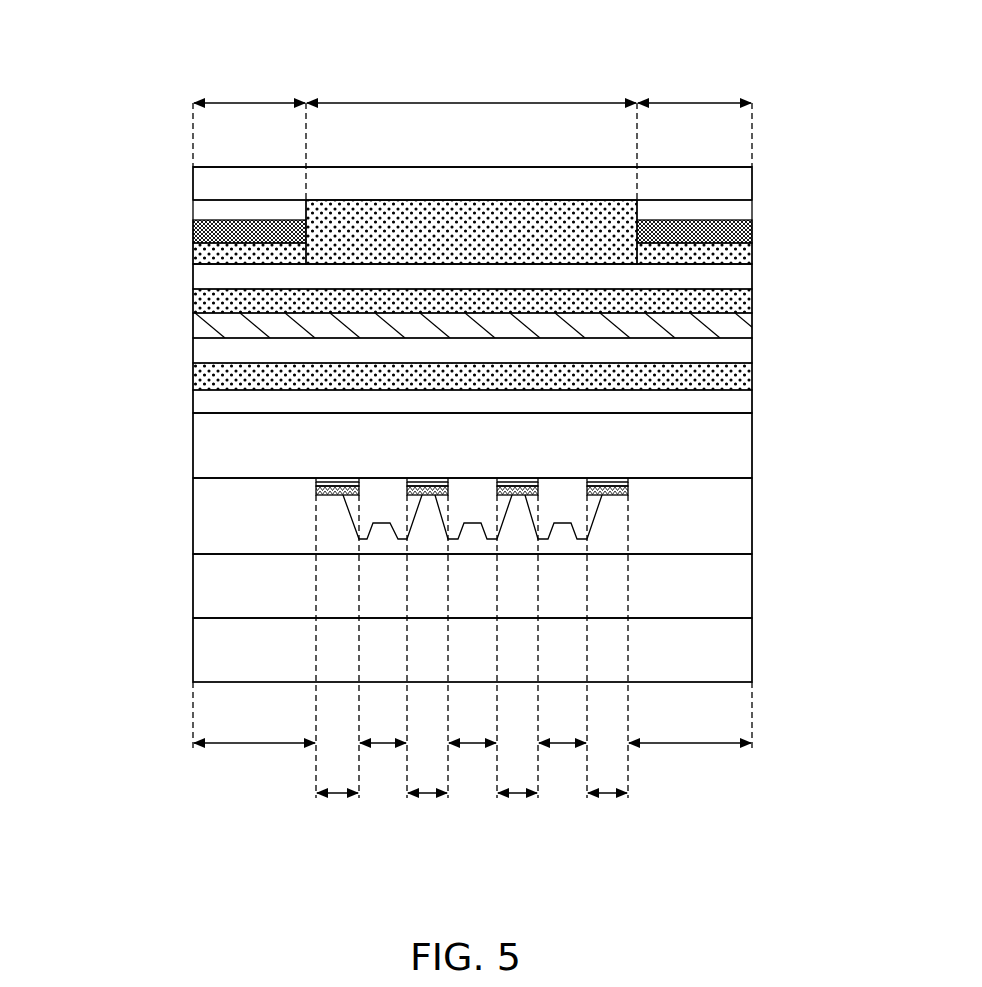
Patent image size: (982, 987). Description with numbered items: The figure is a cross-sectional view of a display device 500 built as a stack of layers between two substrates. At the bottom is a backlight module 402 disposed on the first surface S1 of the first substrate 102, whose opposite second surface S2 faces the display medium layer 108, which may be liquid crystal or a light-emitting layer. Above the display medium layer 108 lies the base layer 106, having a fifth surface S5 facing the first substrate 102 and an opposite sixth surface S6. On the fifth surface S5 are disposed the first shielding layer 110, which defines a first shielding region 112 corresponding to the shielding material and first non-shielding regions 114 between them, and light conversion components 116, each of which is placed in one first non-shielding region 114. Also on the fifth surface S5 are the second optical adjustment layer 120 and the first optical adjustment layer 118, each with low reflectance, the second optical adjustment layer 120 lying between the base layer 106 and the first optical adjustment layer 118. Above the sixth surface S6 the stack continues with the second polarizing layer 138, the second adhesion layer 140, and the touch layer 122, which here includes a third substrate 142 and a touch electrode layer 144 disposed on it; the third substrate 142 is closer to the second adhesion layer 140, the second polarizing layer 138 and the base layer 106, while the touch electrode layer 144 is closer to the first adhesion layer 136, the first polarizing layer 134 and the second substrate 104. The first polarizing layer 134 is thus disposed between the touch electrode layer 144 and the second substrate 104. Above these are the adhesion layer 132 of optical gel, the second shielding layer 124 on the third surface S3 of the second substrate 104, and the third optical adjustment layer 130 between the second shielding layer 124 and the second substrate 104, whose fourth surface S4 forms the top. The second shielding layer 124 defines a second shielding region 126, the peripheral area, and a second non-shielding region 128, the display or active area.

The display device 500 is at (172, 32).
The second substrate 104 is at (738, 184).
The third optical adjustment layer 130 is at (738, 212).
The second shielding layer 124 is at (738, 232).
The adhesion layer 132 is at (738, 258).
The first polarizing layer 134 is at (738, 278).
The first adhesion layer 136 is at (738, 303).
The touch layer 122 is at (405, 335).
The touch electrode layer 144 is at (205, 329).
The third substrate 142 is at (205, 352).
The second adhesion layer 140 is at (738, 377).
The second polarizing layer 138 is at (738, 401).
The base layer 106 is at (205, 427).
The display medium layer 108 is at (472, 501).
The second optical adjustment layer 120 is at (622, 477).
The first optical adjustment layer 118 is at (627, 484).
The first shielding layer 110 is at (620, 496).
The light conversion component 116 is at (568, 508).
The first substrate 102 is at (738, 586).
The backlight module 402 is at (738, 651).
The second shielding region 126 is at (472, 121).
The second non-shielding region 128 is at (471, 137).
The first non-shielding region 114 is at (472, 731).
The first shielding region 112 is at (472, 662).
The first surface S1 is at (225, 622).
The second surface S2 is at (225, 551).
The third surface S3 is at (348, 205).
The fourth surface S4 is at (224, 164).
The fifth surface S5 is at (225, 482).
The sixth surface S6 is at (224, 410).